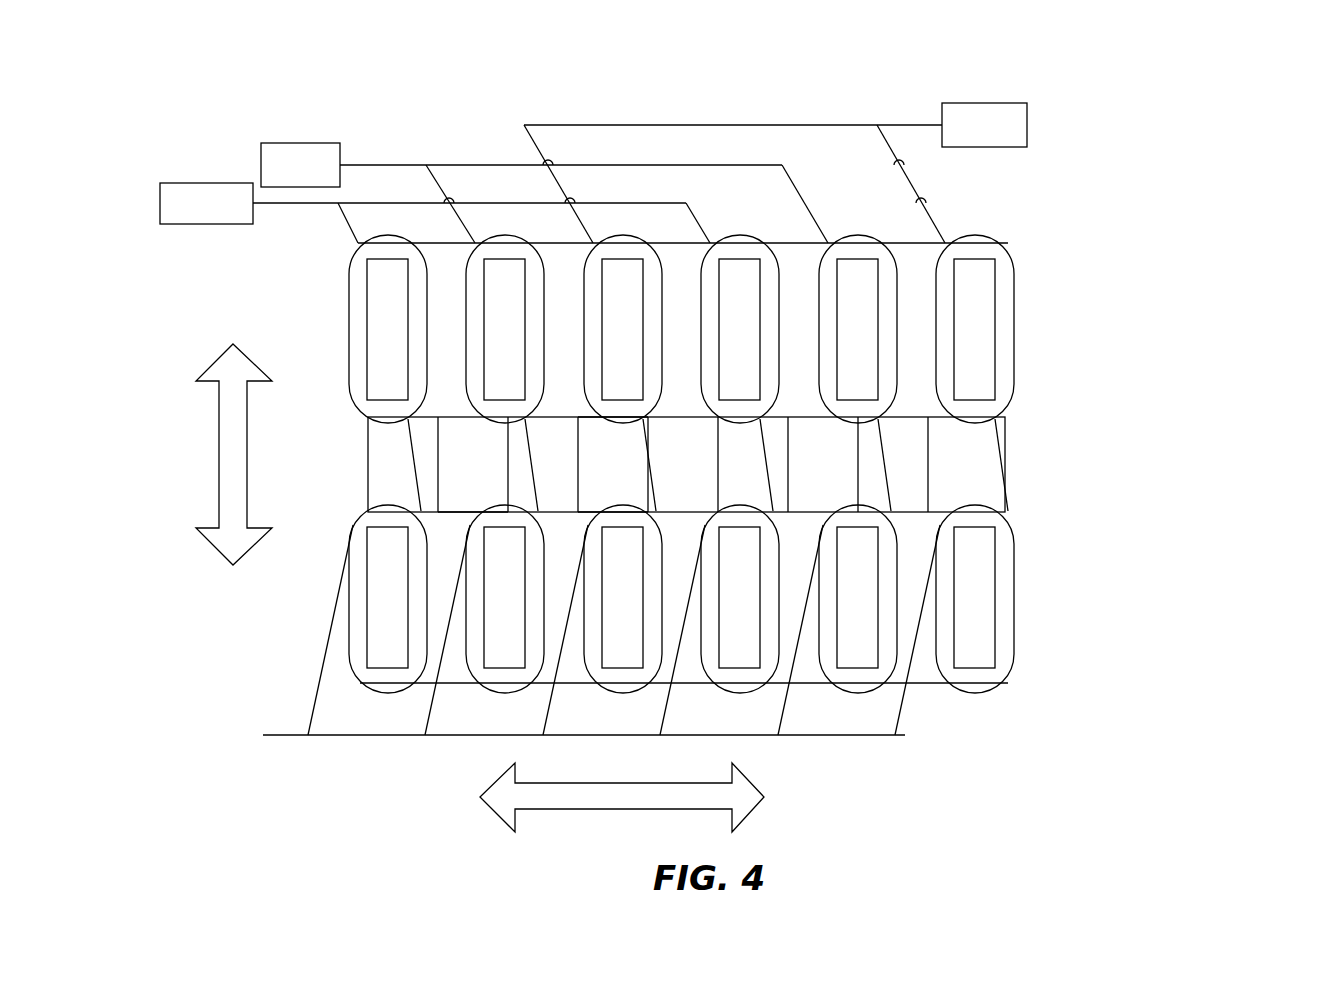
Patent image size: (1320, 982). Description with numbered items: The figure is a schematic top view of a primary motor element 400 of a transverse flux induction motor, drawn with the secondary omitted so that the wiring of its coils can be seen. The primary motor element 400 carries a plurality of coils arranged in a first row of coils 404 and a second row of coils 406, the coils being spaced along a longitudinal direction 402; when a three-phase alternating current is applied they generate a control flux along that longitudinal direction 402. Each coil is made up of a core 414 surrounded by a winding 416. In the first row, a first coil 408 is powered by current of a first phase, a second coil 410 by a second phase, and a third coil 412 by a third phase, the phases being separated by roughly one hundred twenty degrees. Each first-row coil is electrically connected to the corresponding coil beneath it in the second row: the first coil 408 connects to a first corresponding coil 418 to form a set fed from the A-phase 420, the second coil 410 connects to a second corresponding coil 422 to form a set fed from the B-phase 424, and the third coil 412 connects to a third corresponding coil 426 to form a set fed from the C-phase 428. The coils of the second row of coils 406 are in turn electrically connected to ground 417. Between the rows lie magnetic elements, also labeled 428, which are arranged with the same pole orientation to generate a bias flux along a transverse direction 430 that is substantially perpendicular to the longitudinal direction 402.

The primary motor element 400 is at (1208, 110).
The longitudinal direction 402 is at (502, 778).
The first row of coils 404 is at (709, 329).
The second row of coils 406 is at (721, 579).
The first coil 408 is at (344, 405).
The second coil 410 is at (478, 426).
The third coil 412 is at (613, 432).
The core 414 is at (367, 302).
The winding 416 is at (350, 357).
The ground 417 is at (571, 646).
The first corresponding coil 418 is at (338, 510).
The A-phase 420 is at (207, 225).
The second corresponding coil 422 is at (478, 501).
The B-phase 424 is at (303, 143).
The third corresponding coil 426 is at (602, 498).
The C-phase 428 is at (1007, 148).
The transverse direction 430 is at (220, 410).